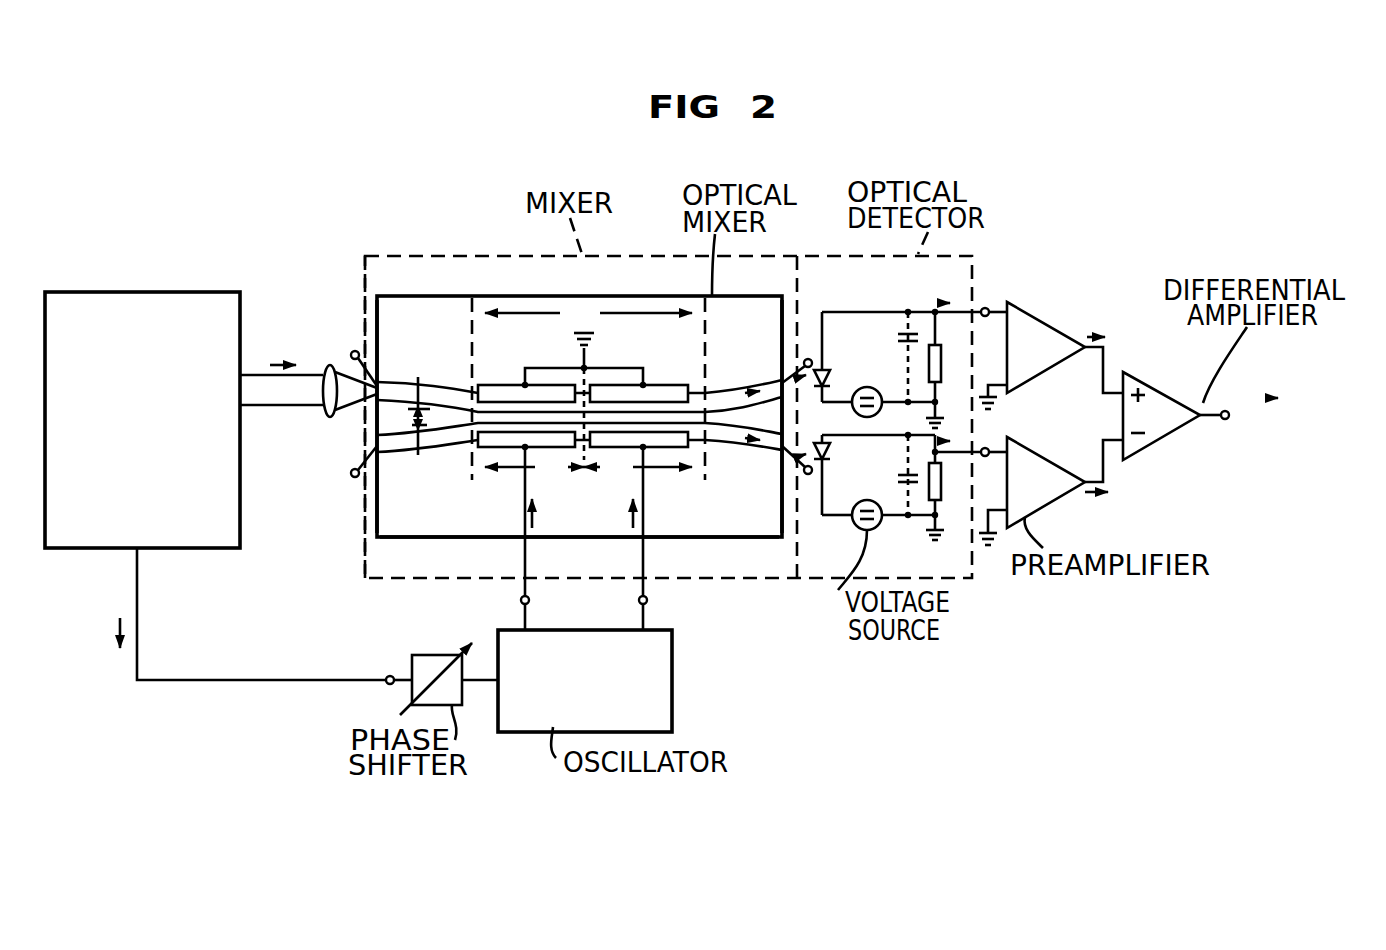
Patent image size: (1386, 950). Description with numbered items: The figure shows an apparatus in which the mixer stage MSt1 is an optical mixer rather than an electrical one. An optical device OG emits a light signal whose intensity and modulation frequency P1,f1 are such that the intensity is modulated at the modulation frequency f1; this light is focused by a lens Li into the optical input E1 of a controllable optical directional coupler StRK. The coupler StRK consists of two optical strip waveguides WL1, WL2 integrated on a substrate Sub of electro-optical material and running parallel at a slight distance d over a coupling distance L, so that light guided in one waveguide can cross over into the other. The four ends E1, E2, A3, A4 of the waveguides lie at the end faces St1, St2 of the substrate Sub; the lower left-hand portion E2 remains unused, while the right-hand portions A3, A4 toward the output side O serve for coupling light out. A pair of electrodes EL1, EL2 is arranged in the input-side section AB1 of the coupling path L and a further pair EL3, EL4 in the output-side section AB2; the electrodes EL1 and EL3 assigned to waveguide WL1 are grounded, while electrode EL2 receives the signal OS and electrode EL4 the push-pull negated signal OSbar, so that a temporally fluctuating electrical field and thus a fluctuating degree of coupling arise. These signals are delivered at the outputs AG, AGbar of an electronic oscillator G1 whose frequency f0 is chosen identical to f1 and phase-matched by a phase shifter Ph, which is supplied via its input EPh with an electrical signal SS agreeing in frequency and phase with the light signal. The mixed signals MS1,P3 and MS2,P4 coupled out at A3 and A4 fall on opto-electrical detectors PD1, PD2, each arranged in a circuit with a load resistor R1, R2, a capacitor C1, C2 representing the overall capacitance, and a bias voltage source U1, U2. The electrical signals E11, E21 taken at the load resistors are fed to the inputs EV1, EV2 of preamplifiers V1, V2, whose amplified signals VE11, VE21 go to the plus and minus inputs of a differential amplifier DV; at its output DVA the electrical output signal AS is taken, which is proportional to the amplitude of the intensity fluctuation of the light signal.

The optical device OG is at (122, 292).
The intensity and modulation frequency of the light signal P1,f1 is at (288, 346).
The lens Li is at (330, 413).
The optical input E1 is at (351, 359).
The left-hand lower portion E2 is at (341, 475).
The end face St1 is at (377, 522).
The end face St2 is at (788, 300).
The substrate Sub is at (443, 538).
The optical directional coupler StRK is at (688, 538).
The mixer stage MSt1 is at (485, 256).
The optical strip waveguide WL1 is at (455, 387).
The optical strip waveguide WL2 is at (443, 432).
The distance between waveguides d is at (418, 455).
The coupling distance L is at (588, 386).
The input-side section of the coupling path AB1 is at (534, 467).
The second electrode section AB2 is at (638, 467).
The electrode EL1 is at (512, 385).
The electrode EL2 is at (510, 447).
The electrode EL3 is at (650, 385).
The electrode EL4 is at (668, 447).
The output region O is at (672, 405).
The mixed signal and signal power MS1,P3 is at (750, 395).
The mixed signal and signal power MS2,P4 is at (750, 447).
The other signal OS is at (560, 523).
The negated other signal OSbar is at (625, 486).
The oscillator output AG is at (539, 538).
The oscillator output AGbar is at (633, 588).
The electronic oscillator G1 is at (672, 680).
The oscillator frequency f0 is at (584, 684).
The phase shifter Ph is at (449, 666).
The phase shifter input EPh is at (390, 676).
The electrical signal SS is at (245, 614).
The modulation frequency f1 is at (160, 587).
The optical output A3 is at (808, 359).
The optical output A4 is at (808, 474).
The opto-electrical detector PD1 is at (897, 357).
The opto-electrical detector PD2 is at (874, 475).
The constant voltage source U1 is at (878, 390).
The constant voltage source U2 is at (862, 501).
The capacitor C1 is at (894, 357).
The capacitor C2 is at (894, 475).
The load resistor R1 is at (947, 368).
The load resistor R2 is at (947, 487).
The electrical signal E11 is at (960, 289).
The electrical signal E21 is at (948, 420).
The preamplifier V1 is at (1040, 320).
The preamplifier V2 is at (1042, 510).
The preamplifier input EV1 is at (983, 308).
The preamplifier input EV2 is at (987, 449).
The amplified electrical signal VE11 is at (1127, 355).
The amplified electrical signal VE21 is at (1132, 475).
The differential amplifier DV is at (1157, 388).
The differential amplifier output DVA is at (1225, 419).
The electrical output signal AS is at (1256, 401).